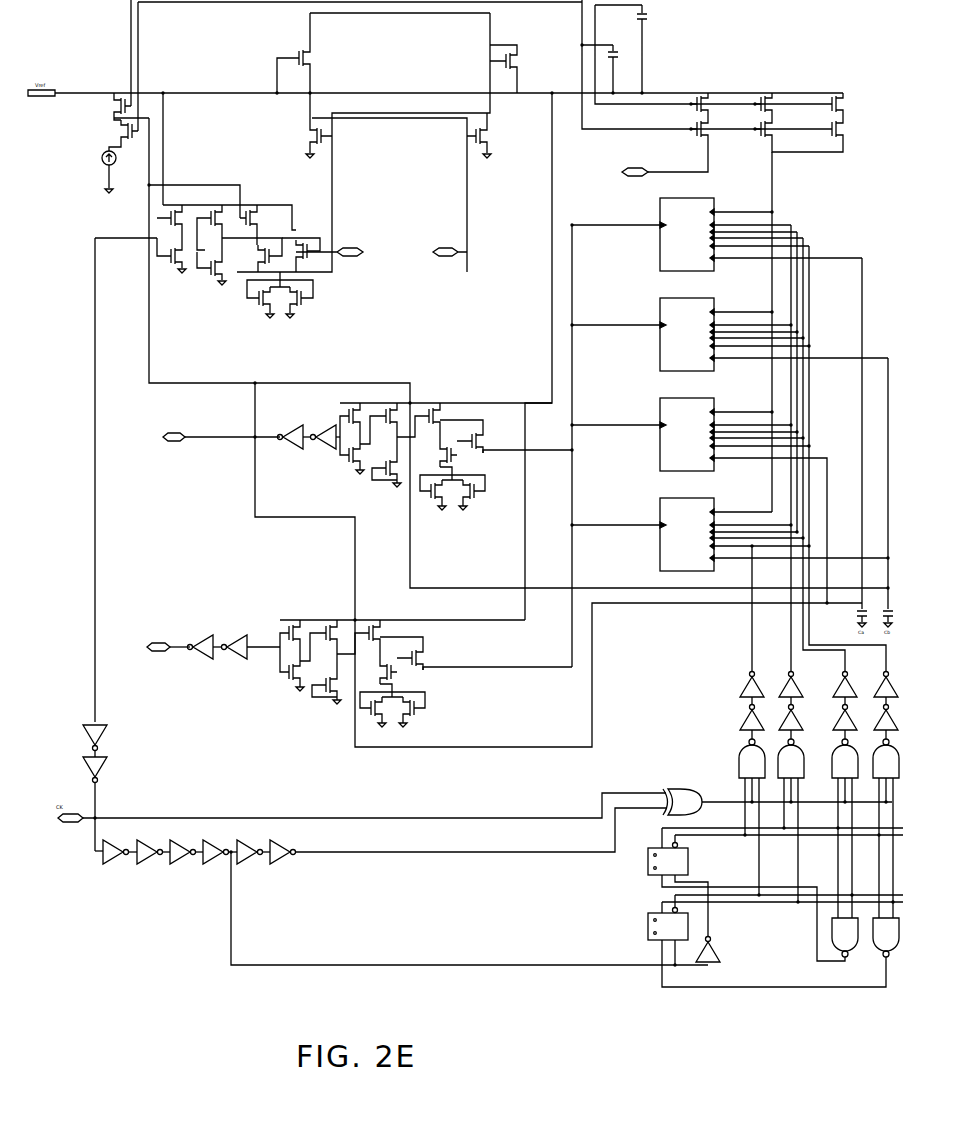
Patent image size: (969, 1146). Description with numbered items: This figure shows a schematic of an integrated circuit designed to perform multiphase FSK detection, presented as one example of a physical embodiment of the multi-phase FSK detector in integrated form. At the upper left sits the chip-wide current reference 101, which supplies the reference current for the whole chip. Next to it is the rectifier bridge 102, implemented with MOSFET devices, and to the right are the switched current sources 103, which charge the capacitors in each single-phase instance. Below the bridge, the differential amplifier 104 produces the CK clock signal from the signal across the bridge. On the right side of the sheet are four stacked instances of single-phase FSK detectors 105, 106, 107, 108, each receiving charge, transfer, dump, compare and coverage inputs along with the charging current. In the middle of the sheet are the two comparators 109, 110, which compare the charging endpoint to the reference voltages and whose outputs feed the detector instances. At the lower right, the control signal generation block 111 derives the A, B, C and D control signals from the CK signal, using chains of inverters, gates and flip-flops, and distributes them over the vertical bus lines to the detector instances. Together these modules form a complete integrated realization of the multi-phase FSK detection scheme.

The chip-wide current reference 101 is at (123, 83).
The rectifier bridge 102 is at (320, 72).
The switched current sources 103 is at (802, 83).
The differential amplifier 104 is at (218, 180).
The single-phase FSK detector 105 is at (635, 210).
The single-phase FSK detector 106 is at (653, 317).
The single-phase FSK detector 107 is at (653, 415).
The single-phase FSK detector 108 is at (652, 510).
The comparator 109 is at (425, 395).
The comparator 110 is at (333, 605).
The control signal generation 111 is at (735, 677).